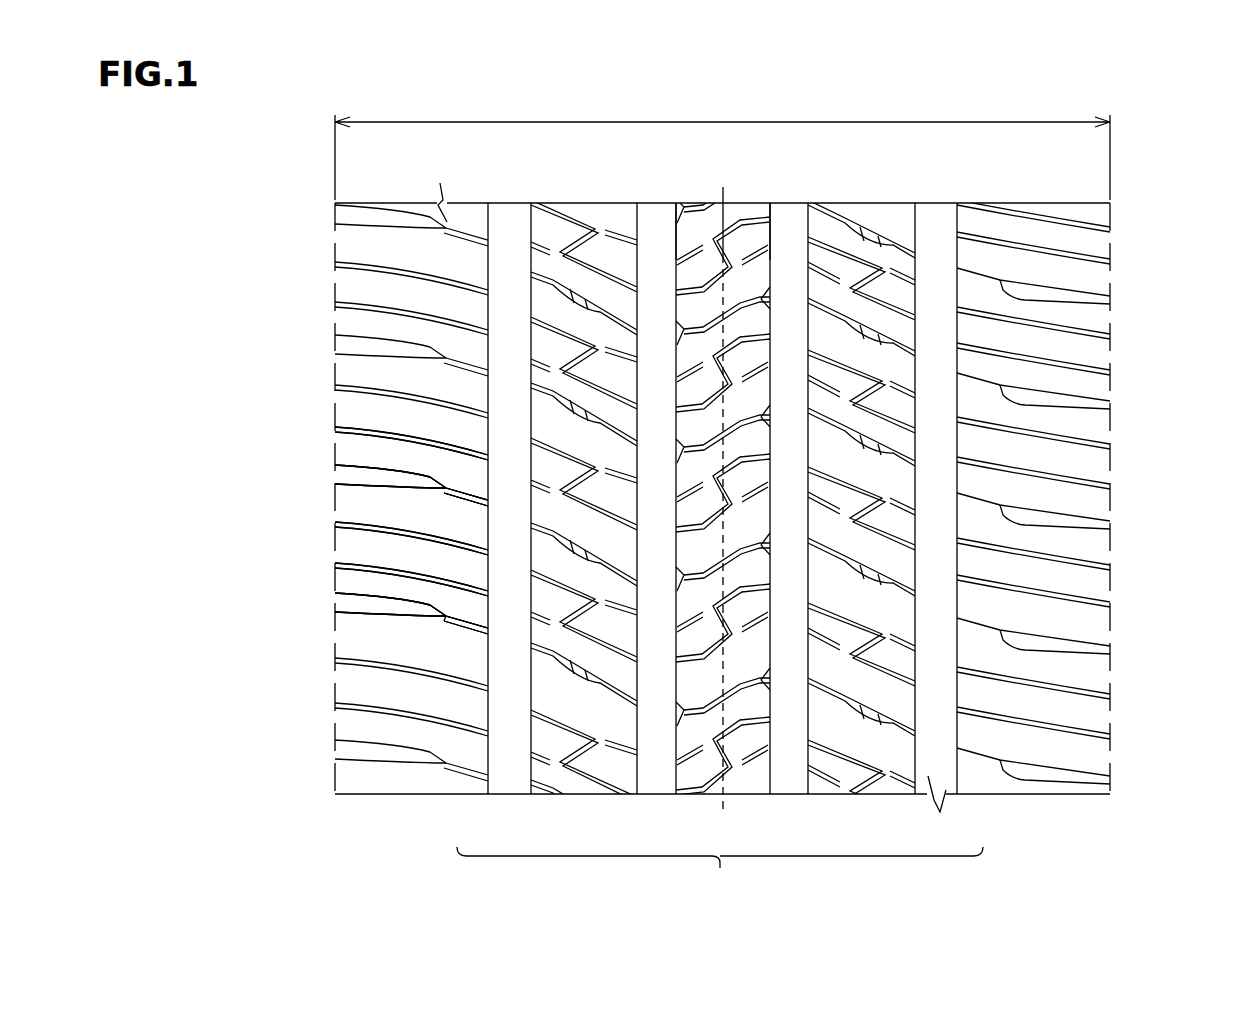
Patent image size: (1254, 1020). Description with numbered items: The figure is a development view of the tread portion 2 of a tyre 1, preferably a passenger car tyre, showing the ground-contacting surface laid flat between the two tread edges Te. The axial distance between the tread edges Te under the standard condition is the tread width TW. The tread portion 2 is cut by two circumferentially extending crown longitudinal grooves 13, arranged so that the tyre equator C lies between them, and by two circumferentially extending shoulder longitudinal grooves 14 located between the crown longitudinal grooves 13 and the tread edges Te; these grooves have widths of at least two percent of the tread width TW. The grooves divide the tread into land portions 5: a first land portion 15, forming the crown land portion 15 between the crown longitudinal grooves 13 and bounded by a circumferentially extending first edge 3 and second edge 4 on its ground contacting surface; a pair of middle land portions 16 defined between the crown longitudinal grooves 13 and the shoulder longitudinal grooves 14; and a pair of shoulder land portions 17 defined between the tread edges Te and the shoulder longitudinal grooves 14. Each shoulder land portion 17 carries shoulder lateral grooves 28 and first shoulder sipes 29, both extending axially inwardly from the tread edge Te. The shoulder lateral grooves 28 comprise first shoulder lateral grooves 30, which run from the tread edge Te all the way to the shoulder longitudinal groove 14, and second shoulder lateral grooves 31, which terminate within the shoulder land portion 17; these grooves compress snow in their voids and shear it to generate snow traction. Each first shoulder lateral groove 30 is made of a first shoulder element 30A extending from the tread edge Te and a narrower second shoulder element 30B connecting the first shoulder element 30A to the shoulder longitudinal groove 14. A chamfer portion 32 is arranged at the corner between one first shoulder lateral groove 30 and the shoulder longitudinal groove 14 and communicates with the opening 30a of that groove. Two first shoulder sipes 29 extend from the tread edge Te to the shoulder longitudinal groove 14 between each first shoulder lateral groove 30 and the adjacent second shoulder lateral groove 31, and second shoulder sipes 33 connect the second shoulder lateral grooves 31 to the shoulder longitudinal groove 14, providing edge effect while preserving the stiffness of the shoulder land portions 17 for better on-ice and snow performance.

The tyre 1 is at (1219, 151).
The tread portion 2 is at (1034, 192).
The first edge 3 is at (678, 220).
The second edge 4 is at (775, 220).
The land portions 5 is at (720, 872).
The crown longitudinal grooves 13 is at (655, 238).
The shoulder longitudinal grooves 14 is at (509, 235).
The first land portion (crown land portion) 15 is at (700, 775).
The middle land portions 16 is at (607, 768).
The shoulder land portions 17 is at (457, 745).
The shoulder lateral grooves 28 is at (378, 473).
The first shoulder sipes 29 is at (375, 525).
The first shoulder lateral grooves 30 is at (214, 597).
The first shoulder element 30A is at (385, 610).
The second shoulder element 30B is at (292, 727).
The opening 30a is at (344, 678).
The second shoulder lateral grooves 31 is at (411, 485).
The chamfer portions 32 is at (497, 642).
The second shoulder sipes 33 is at (463, 493).
The tread width TW is at (722, 145).
The tread edges Te is at (335, 245).
The tyre equator C is at (723, 488).